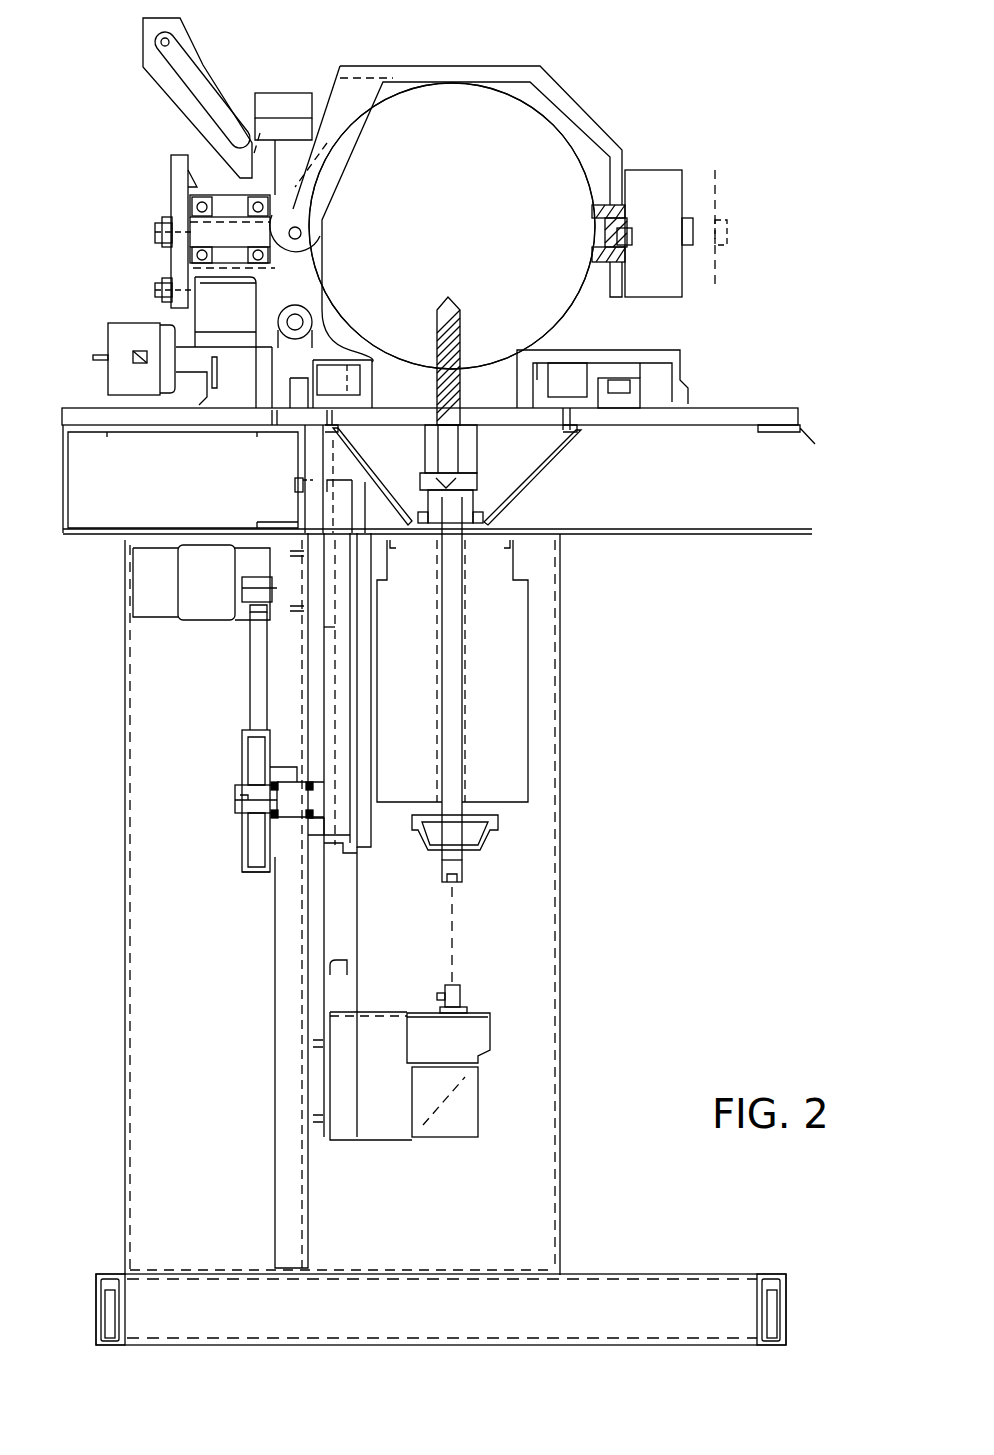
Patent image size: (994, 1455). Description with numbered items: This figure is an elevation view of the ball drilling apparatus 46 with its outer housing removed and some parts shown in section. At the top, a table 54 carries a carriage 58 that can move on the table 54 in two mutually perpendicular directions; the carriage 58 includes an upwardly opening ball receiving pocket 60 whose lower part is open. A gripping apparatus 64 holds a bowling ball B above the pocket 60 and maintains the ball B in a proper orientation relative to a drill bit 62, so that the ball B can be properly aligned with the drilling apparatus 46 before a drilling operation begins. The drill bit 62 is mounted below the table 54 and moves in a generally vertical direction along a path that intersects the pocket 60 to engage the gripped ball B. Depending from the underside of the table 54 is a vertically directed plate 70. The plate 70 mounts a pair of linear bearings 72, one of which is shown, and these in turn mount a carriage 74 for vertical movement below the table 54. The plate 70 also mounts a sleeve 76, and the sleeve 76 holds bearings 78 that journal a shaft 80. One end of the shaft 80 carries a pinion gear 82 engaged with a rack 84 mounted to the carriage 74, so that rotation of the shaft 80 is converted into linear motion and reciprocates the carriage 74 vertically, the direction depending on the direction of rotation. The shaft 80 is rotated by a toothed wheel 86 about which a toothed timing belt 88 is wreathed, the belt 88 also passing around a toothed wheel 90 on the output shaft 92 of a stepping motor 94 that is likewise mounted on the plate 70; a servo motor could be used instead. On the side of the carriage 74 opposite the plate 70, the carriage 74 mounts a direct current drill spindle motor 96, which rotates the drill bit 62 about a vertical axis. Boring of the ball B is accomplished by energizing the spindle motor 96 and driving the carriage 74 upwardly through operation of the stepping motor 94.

The ball drilling apparatus 46 is at (668, 677).
The table 54 is at (766, 407).
The carriage 58 is at (660, 347).
The ball receiving pocket 60 is at (530, 345).
The drill bit 62 is at (461, 320).
The gripping apparatus 64 is at (597, 120).
The plate 70 is at (317, 968).
The linear bearings 72 is at (333, 835).
The carriage 74 is at (367, 845).
The sleeve 76 is at (287, 773).
The bearings 78 is at (298, 833).
The shaft 80 is at (238, 827).
The pinion gear 82 is at (368, 780).
The rack 84 is at (345, 735).
The toothed wheel 86 is at (255, 873).
The toothed timing belt 88 is at (255, 685).
The toothed wheel 90 is at (252, 607).
The output shaft 92 is at (277, 596).
The stepping motor 94 is at (193, 597).
The direct current drill spindle motor 96 is at (515, 742).
The bowling ball B is at (560, 314).